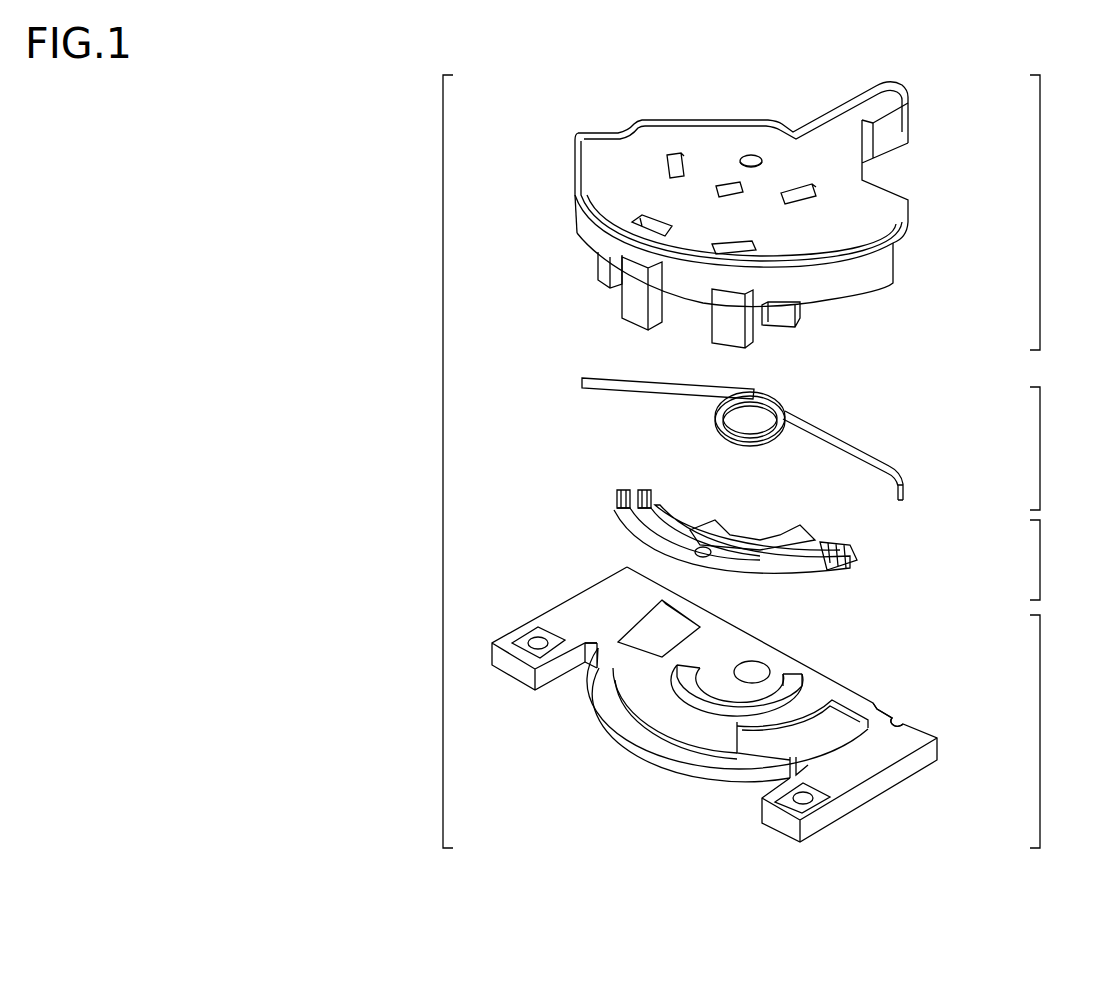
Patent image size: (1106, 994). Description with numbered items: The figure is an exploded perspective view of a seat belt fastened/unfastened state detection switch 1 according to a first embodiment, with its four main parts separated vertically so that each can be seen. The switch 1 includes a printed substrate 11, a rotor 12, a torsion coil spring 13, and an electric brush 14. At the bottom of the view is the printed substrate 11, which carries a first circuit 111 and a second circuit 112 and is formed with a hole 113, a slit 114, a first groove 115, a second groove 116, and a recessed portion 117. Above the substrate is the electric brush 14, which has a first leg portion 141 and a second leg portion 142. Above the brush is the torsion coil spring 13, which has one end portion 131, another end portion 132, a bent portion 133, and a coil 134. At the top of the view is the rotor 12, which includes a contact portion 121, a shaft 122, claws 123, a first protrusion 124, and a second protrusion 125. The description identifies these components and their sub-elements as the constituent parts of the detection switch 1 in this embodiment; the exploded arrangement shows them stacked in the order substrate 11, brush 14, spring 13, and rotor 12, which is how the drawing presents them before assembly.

The seat belt fastened/unfastened state detection switch 1 is at (443, 462).
The printed substrate 11 is at (1040, 730).
The first circuit 111 is at (654, 645).
The second circuit 112 is at (835, 718).
The hole 113 is at (752, 668).
The slit 114 is at (805, 690).
The first groove 115 is at (583, 652).
The second groove 116 is at (790, 775).
The recessed portion 117 is at (920, 713).
The rotor 12 is at (1040, 213).
The contact portion 121 is at (900, 86).
The shaft 122 is at (750, 152).
The claws 123 is at (630, 300).
The first protrusion 124 is at (600, 270).
The second protrusion 125 is at (805, 316).
The torsion coil spring 13 is at (1040, 447).
The end portion 131 is at (585, 400).
The end portion 132 is at (905, 503).
The bent portion 133 is at (893, 466).
The coil 134 is at (748, 448).
The electric brush 14 is at (1040, 560).
The first leg portion 141 is at (618, 492).
The second leg portion 142 is at (830, 540).